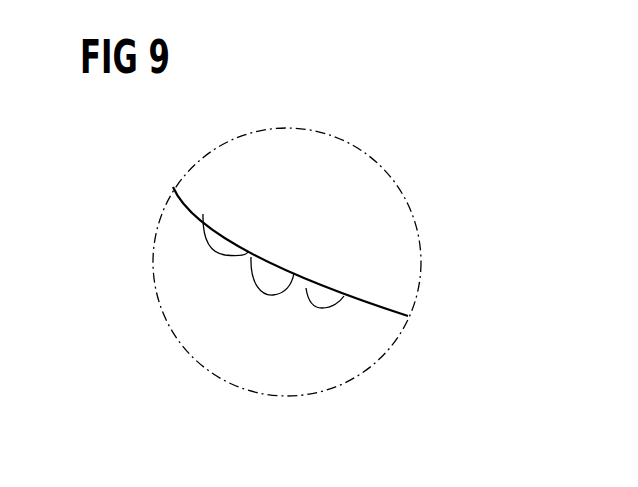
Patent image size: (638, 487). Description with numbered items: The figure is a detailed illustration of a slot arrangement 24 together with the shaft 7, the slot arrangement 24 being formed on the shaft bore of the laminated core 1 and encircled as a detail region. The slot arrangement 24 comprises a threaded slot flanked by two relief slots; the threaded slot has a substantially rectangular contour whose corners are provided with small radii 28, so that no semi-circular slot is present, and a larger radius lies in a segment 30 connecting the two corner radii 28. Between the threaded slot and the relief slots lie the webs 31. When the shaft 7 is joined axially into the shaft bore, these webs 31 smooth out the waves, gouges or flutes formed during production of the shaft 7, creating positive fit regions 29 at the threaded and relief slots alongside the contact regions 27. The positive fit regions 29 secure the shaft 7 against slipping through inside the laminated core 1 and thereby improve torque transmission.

The laminated core 1 is at (287, 387).
The shaft 7 is at (403, 272).
The slot arrangement 24 is at (438, 137).
The contact region 27 is at (254, 245).
The radius 28 is at (207, 232).
The positive fit region 29 is at (258, 290).
The segment 30 is at (244, 250).
The web 31 is at (266, 276).